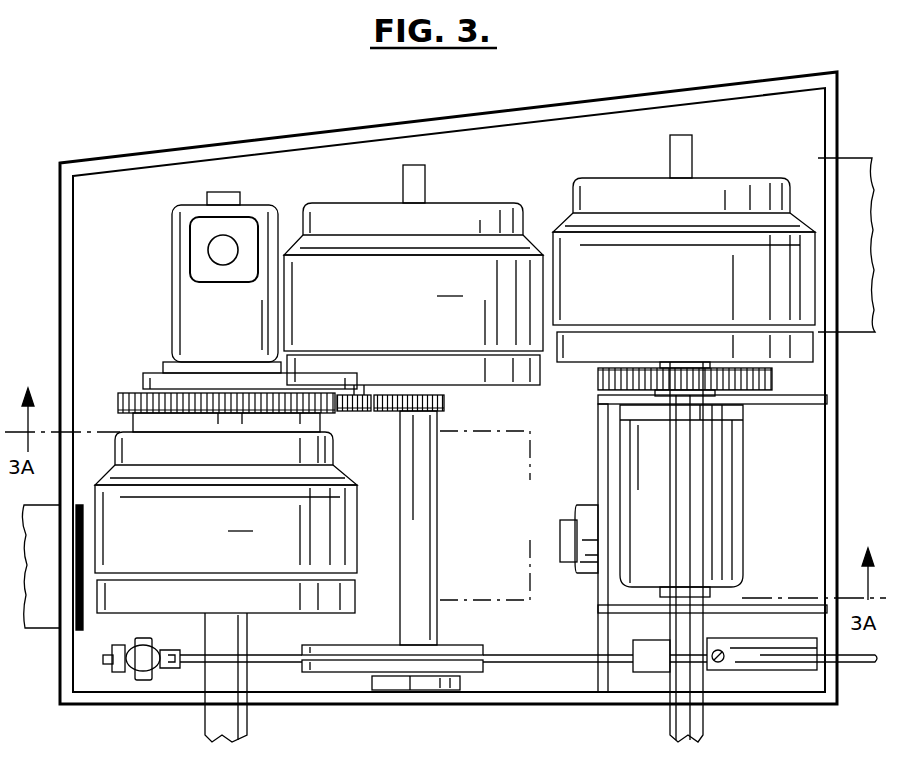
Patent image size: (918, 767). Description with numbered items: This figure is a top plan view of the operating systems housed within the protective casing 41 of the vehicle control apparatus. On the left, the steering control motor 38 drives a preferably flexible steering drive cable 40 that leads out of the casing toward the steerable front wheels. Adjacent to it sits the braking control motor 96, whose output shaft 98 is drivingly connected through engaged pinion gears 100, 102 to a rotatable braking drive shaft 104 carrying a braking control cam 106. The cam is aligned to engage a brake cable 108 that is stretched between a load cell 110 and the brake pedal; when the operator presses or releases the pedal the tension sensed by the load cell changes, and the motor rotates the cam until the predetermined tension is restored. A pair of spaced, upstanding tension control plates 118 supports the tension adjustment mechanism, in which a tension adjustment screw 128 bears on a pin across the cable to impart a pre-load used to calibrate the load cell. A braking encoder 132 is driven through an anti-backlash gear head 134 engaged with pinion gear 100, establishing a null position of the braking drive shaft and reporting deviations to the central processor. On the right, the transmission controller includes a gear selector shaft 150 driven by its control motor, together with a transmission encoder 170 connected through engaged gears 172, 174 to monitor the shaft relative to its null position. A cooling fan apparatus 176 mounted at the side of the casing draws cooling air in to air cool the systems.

The steering control motor 38 is at (226, 522).
The steering drive cable 40 is at (240, 722).
The protective casing 41 is at (838, 532).
The braking control motor 96 is at (413, 275).
The output shaft 98 is at (358, 392).
The pinion gear 100 is at (368, 413).
The pinion gear 102 is at (445, 402).
The braking drive shaft 104 is at (420, 479).
The braking control cam 106 is at (458, 643).
The brake cable 108 is at (545, 652).
The load cell 110 is at (118, 668).
The tension control plates 118 is at (790, 658).
The tension adjustment screw 128 is at (722, 662).
The braking encoder 132 is at (185, 228).
The gear head 134 is at (118, 400).
The gear selector shaft 150 is at (680, 720).
The transmission encoder 170 is at (725, 479).
The gear 172 is at (702, 382).
The gear 174 is at (773, 382).
The cooling fan apparatus 176 is at (858, 160).